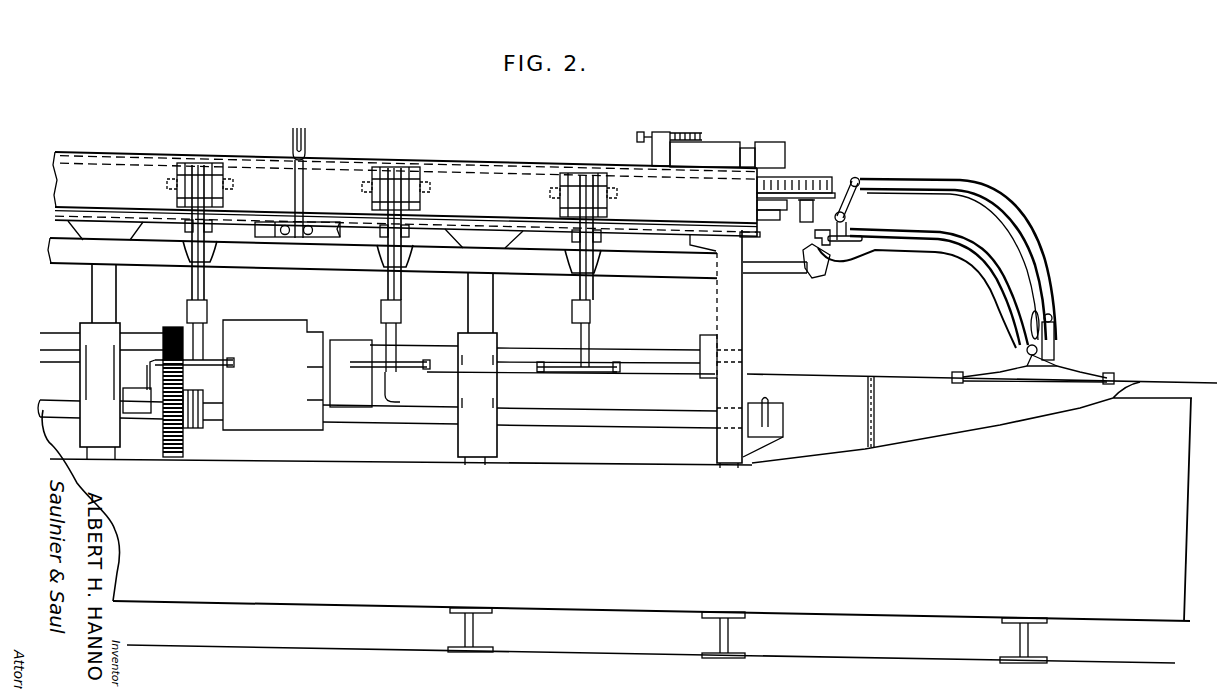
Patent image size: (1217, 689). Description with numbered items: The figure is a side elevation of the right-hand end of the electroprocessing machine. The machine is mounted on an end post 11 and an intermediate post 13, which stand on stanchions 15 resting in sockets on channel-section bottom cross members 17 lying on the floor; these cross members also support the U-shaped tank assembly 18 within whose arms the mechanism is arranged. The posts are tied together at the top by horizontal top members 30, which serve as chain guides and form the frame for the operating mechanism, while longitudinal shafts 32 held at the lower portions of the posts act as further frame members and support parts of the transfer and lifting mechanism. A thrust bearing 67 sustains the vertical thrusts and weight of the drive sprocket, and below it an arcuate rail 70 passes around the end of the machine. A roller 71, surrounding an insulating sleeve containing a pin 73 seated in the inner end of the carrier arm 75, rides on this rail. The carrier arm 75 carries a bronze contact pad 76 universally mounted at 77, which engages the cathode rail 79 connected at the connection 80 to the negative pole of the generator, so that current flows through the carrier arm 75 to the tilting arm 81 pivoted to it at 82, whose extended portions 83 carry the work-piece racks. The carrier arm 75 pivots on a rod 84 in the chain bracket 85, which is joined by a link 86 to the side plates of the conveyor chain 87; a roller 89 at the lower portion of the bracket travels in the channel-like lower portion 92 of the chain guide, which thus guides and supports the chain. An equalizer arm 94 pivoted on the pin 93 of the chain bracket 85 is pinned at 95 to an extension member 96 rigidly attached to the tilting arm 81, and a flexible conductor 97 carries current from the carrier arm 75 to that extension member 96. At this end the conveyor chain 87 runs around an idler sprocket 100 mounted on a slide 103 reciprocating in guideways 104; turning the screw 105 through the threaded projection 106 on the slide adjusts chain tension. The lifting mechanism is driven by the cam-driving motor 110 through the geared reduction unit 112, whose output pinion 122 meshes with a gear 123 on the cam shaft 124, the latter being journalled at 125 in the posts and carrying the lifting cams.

The end post 11 is at (740, 325).
The intermediate post 13 is at (92, 280).
The stanchion 15 is at (107, 458).
The bottom cross member 17 is at (486, 650).
The tank assembly 18 is at (893, 387).
The horizontal top member 30 is at (667, 205).
The longitudinal shaft 32 is at (673, 353).
The thrust bearing 67 is at (757, 202).
The arcuate rail 70 is at (778, 266).
The roller 71 is at (212, 252).
The pin 73 is at (812, 276).
The carrier arm 75 is at (192, 278).
The contact pad 76 is at (822, 233).
The universal mounting 77 is at (836, 246).
The cathode rail 79 is at (325, 222).
The connection 80 is at (303, 143).
The tilting arm 81 is at (212, 360).
The pivot 82 is at (1027, 350).
The extended portion 83 is at (232, 358).
The rod 84 is at (846, 217).
The chain bracket 85 is at (852, 203).
The link 86 is at (871, 220).
The conveyor chain 87 is at (820, 172).
The roller 89 is at (816, 210).
The lower portion of chain guide 92 is at (627, 225).
The pin 93 is at (858, 180).
The equalizer arm 94 is at (205, 280).
The pin 95 is at (1055, 318).
The extension member 96 is at (200, 312).
The flexible conductor 97 is at (1037, 302).
The idler sprocket 100 is at (830, 193).
The slide 103 is at (757, 142).
The guideway 104 is at (727, 142).
The screw 105 is at (637, 137).
The threaded projection 106 is at (661, 132).
The cam-driving motor 110 is at (348, 345).
The geared reduction unit 112 is at (268, 330).
The pinion 122 is at (170, 330).
The gear 123 is at (172, 460).
The cam shaft 124 is at (575, 425).
The journal 125 is at (119, 445).